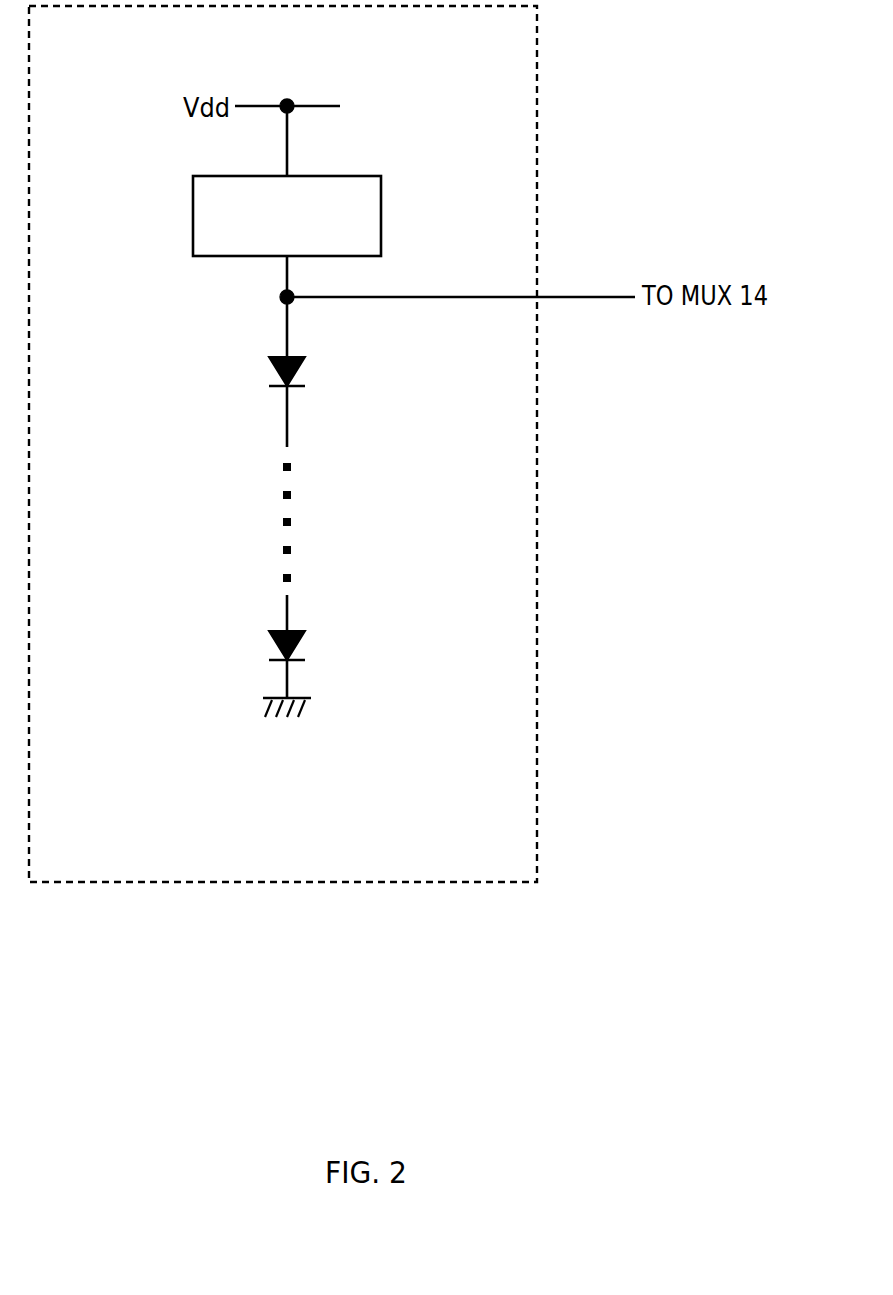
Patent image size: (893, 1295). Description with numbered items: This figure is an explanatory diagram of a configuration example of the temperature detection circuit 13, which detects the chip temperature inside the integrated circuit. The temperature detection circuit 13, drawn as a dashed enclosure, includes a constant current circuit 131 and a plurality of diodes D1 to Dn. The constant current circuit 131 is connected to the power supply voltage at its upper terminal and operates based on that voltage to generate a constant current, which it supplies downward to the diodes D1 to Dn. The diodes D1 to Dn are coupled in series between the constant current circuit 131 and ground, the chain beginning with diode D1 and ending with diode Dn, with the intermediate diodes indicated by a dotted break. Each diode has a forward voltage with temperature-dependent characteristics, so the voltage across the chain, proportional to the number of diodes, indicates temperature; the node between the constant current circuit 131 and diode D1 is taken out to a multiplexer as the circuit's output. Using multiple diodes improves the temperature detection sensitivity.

The temperature detection circuit 13 is at (537, 116).
The constant current circuit 131 is at (381, 212).
The diode D1 is at (297, 372).
The diode Dn is at (297, 645).